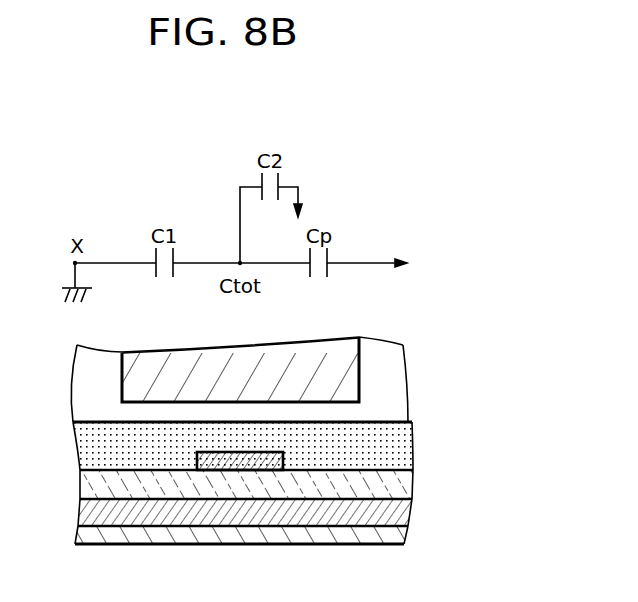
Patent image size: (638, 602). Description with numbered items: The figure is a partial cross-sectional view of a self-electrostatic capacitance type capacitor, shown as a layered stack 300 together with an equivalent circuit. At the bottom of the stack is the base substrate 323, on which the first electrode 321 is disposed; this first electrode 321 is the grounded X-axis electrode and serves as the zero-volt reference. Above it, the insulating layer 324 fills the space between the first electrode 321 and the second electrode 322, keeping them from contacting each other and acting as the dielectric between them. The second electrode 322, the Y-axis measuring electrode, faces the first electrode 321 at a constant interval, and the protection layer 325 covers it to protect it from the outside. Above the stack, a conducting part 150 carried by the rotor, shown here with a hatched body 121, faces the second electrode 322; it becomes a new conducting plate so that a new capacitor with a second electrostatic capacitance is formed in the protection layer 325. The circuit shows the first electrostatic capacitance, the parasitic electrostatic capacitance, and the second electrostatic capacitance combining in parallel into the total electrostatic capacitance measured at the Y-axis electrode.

The conductive pattern / electrode 121 is at (359, 371).
The conducting part 150 is at (345, 407).
The sensing layer stack 300 is at (276, 508).
The first electrode 321 is at (168, 513).
The second electrode 322 is at (247, 470).
The base substrate 323 is at (97, 537).
The insulating layer 324 is at (320, 488).
The protection layer 325 is at (382, 455).